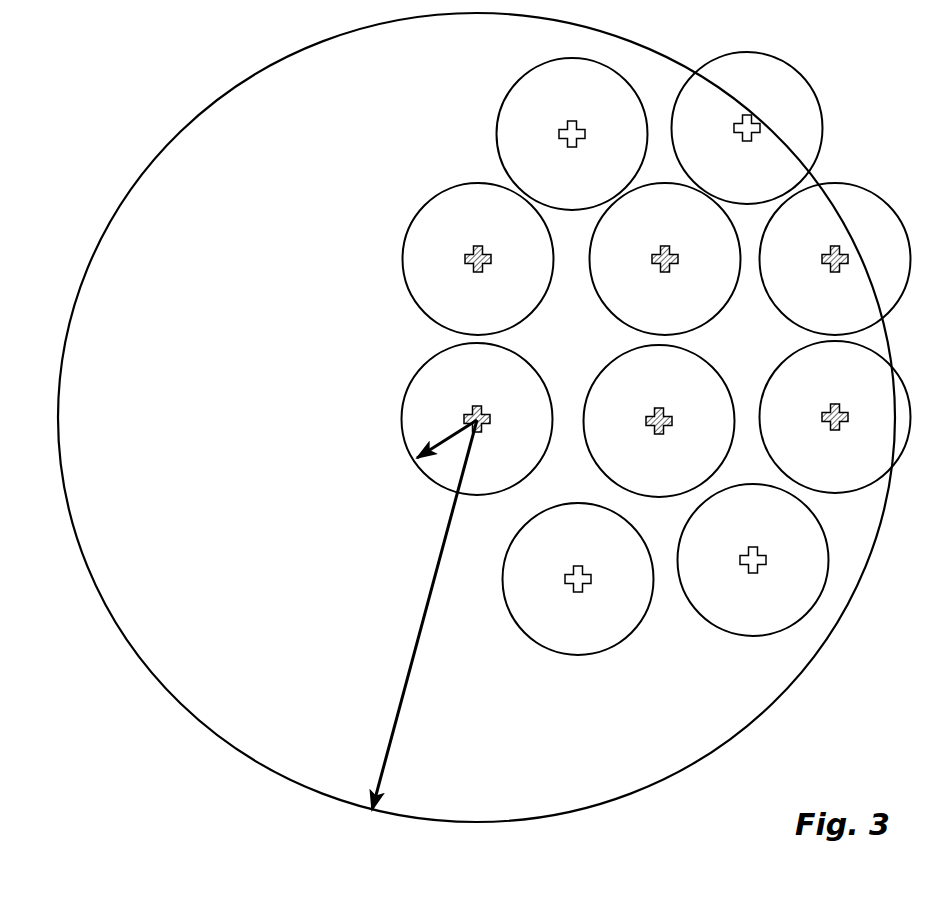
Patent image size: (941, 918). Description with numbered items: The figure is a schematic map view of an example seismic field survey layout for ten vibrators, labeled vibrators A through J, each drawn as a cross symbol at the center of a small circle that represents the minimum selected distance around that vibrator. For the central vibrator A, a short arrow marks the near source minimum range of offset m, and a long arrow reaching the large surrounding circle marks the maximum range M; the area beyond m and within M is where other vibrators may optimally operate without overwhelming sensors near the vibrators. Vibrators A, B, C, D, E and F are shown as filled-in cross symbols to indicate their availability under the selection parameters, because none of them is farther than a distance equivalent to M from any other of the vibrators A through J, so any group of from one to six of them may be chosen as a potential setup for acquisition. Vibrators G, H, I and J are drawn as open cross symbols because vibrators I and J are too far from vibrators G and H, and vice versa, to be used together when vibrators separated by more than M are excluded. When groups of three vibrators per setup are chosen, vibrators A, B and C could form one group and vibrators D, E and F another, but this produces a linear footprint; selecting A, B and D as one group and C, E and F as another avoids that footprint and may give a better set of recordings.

The vibrator A is at (477, 419).
The vibrator B is at (659, 421).
The vibrator C is at (835, 417).
The vibrator D is at (478, 259).
The vibrator E is at (665, 259).
The vibrator F is at (835, 259).
The vibrator G is at (572, 134).
The vibrator H is at (747, 128).
The vibrator I is at (578, 579).
The vibrator J is at (753, 560).
The near source minimum range of offset m is at (447, 436).
The maximum range M is at (424, 615).